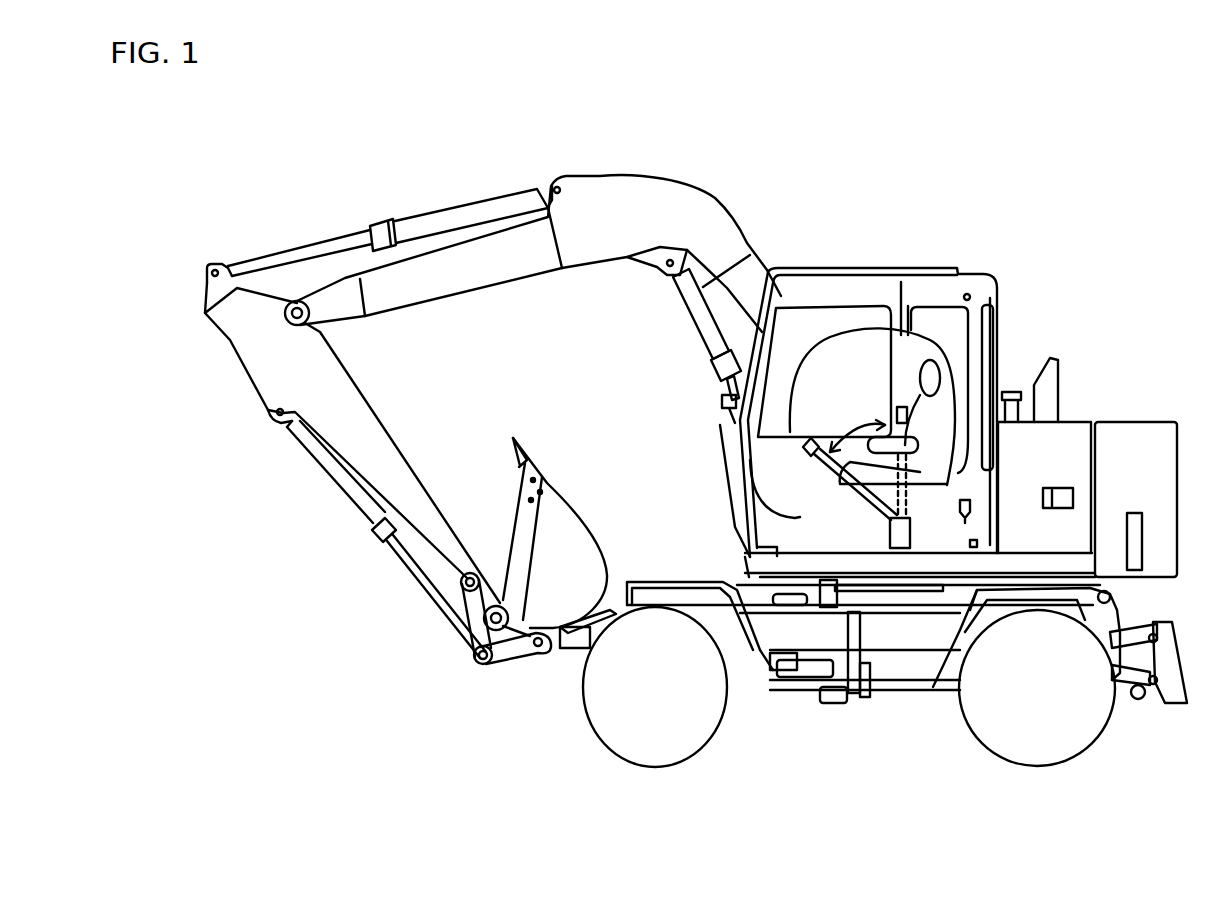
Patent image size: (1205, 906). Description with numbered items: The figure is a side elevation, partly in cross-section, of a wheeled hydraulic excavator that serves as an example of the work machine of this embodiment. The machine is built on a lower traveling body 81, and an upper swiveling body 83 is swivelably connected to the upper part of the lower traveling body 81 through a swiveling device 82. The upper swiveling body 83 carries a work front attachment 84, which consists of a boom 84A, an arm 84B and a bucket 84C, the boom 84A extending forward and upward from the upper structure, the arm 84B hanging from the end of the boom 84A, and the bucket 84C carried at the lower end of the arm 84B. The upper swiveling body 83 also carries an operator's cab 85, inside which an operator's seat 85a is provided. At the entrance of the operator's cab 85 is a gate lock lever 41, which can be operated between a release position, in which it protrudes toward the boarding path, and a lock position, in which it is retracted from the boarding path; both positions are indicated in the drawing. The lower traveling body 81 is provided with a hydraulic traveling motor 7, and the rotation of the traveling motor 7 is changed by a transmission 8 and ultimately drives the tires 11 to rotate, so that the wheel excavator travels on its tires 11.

The work front attachment 84 is at (741, 203).
The boom 84A is at (645, 184).
The arm 84B is at (380, 413).
The bucket 84C is at (580, 517).
The operator's cab 85 is at (862, 268).
The operator's seat 85a is at (925, 412).
The gate lock lever 41 is at (828, 472).
The upper swiveling body 83 is at (1153, 413).
The swiveling device 82 is at (820, 592).
The lower traveling body 81 is at (1140, 622).
The traveling motor 7 is at (818, 676).
The transmission 8 is at (840, 705).
The tires 11 is at (612, 708).